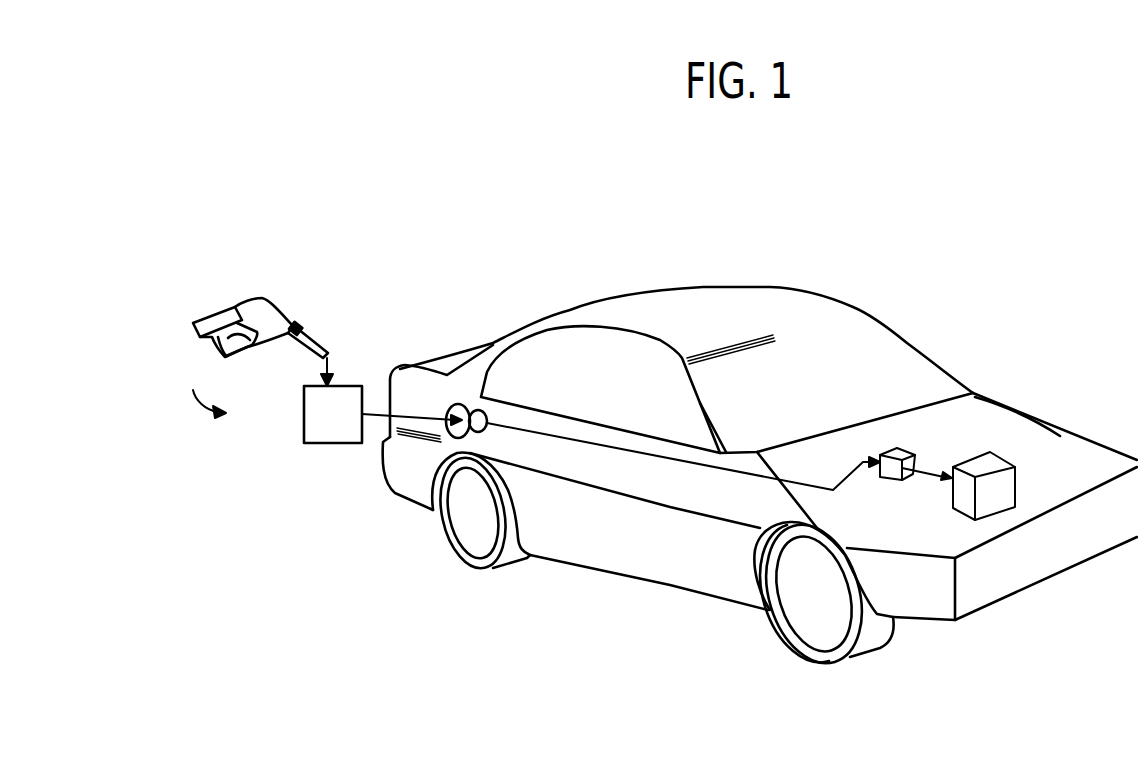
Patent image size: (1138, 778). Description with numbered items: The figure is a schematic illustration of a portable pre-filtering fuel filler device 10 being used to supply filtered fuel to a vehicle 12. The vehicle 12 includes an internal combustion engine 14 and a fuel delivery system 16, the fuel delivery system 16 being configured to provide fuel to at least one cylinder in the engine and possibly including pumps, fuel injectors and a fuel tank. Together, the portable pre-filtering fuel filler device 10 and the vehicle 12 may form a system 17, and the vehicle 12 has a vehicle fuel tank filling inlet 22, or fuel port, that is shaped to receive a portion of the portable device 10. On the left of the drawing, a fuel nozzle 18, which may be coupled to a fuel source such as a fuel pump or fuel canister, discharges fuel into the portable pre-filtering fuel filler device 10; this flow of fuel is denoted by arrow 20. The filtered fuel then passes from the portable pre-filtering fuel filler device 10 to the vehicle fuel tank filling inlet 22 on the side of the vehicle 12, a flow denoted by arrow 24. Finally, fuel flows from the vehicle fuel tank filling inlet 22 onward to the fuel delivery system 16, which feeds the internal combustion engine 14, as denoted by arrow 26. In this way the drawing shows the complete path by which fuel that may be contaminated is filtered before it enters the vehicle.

The portable pre-filtering fuel filler device 10 is at (304, 415).
The vehicle 12 is at (710, 286).
The internal combustion engine 14 is at (1002, 460).
The fuel delivery system 16 is at (902, 453).
The system 17 is at (206, 390).
The fuel nozzle 18 is at (263, 302).
The arrow 20 is at (328, 364).
The vehicle fuel tank filling inlet 22 is at (452, 408).
The arrow 24 is at (377, 413).
The arrow 26 is at (535, 436).